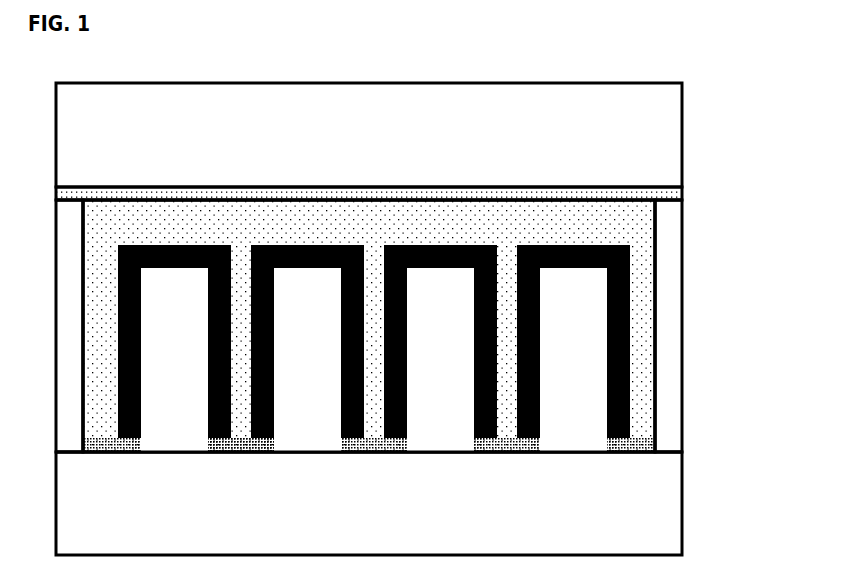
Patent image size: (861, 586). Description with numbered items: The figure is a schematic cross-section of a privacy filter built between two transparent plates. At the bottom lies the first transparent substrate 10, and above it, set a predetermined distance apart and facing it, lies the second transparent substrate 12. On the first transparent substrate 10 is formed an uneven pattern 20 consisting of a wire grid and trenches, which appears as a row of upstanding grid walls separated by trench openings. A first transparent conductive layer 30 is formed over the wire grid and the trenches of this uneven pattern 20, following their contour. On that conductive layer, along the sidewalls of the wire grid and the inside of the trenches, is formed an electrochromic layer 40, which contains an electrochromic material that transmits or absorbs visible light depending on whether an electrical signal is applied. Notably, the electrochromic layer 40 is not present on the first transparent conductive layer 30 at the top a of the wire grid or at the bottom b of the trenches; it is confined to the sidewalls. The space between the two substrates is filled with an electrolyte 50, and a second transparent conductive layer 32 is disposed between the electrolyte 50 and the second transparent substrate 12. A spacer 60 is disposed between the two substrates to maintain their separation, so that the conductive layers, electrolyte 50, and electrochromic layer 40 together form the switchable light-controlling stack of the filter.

The first transparent substrate 10 is at (672, 500).
The second transparent substrate 12 is at (670, 133).
The uneven pattern 20 is at (582, 426).
The first transparent conductive layer 30 is at (603, 254).
The second transparent conductive layer 32 is at (672, 190).
The electrochromic layer 40 is at (627, 383).
The electrolyte 50 is at (640, 222).
The spacer 60 is at (672, 330).
The top of the wire grid a is at (170, 245).
The bottom of the trenches b is at (240, 452).